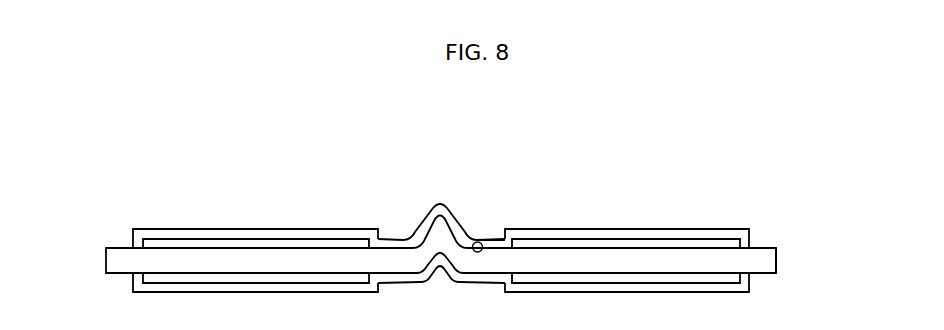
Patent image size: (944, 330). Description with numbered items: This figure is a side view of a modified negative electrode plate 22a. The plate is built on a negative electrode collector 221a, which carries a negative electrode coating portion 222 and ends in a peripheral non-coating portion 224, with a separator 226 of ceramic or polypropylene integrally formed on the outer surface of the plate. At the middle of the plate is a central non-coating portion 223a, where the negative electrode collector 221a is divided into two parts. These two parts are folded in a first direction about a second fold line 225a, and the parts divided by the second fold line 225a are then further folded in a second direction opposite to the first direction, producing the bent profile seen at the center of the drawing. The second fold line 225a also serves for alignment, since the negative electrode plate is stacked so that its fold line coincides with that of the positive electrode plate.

The negative electrode plate 22a is at (82, 224).
The negative electrode collector 221a is at (770, 260).
The negative electrode coating portion 222 is at (618, 243).
The central non-coating portion 223a is at (472, 242).
The peripheral non-coating portion 224 is at (765, 244).
The second fold line 225a is at (440, 203).
The separator 226 is at (253, 238).